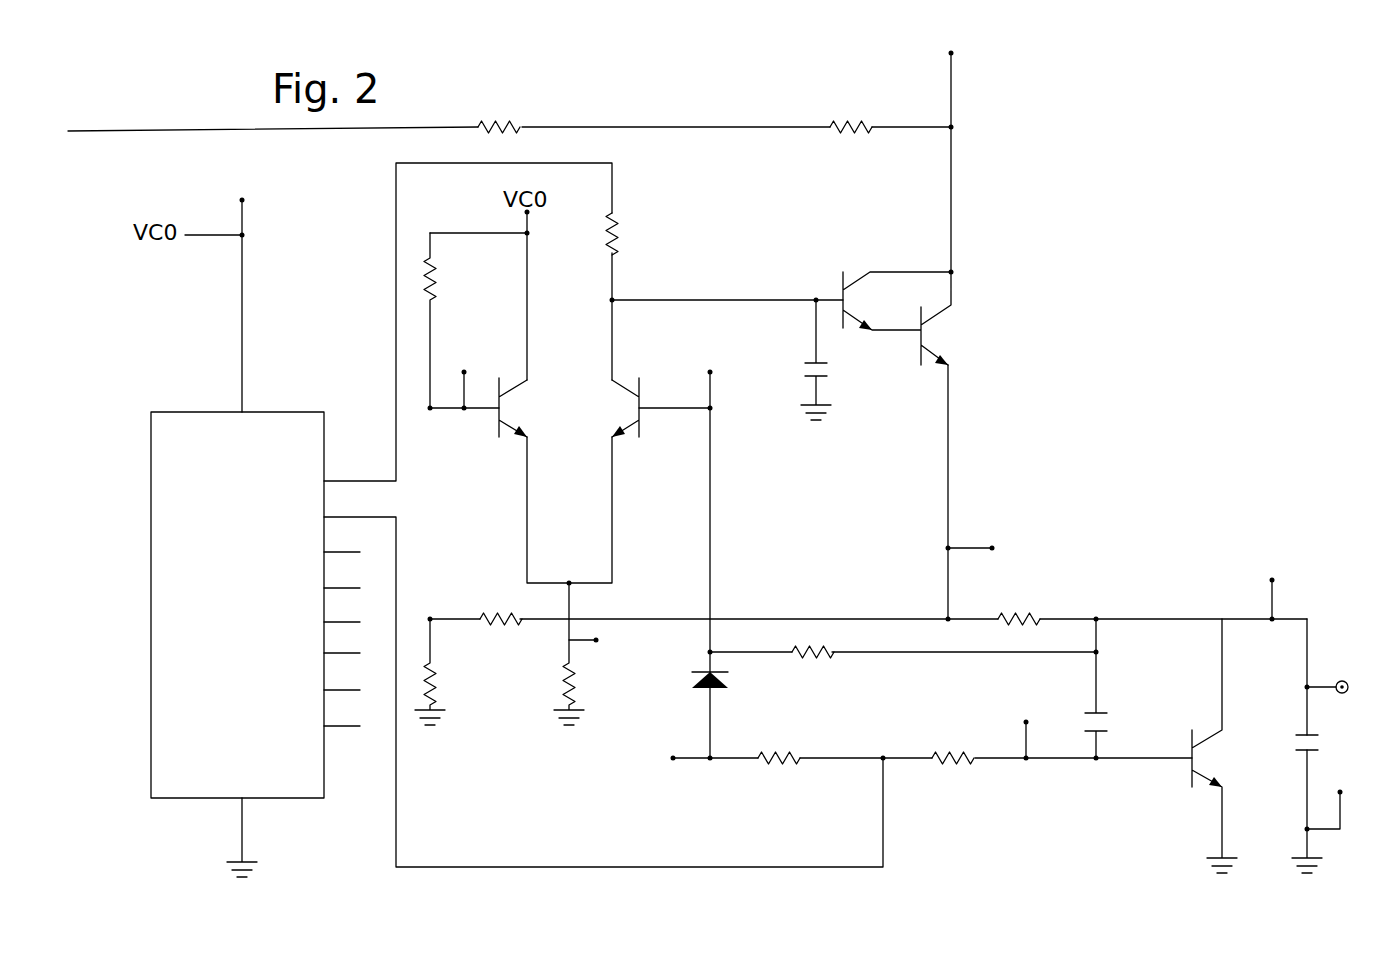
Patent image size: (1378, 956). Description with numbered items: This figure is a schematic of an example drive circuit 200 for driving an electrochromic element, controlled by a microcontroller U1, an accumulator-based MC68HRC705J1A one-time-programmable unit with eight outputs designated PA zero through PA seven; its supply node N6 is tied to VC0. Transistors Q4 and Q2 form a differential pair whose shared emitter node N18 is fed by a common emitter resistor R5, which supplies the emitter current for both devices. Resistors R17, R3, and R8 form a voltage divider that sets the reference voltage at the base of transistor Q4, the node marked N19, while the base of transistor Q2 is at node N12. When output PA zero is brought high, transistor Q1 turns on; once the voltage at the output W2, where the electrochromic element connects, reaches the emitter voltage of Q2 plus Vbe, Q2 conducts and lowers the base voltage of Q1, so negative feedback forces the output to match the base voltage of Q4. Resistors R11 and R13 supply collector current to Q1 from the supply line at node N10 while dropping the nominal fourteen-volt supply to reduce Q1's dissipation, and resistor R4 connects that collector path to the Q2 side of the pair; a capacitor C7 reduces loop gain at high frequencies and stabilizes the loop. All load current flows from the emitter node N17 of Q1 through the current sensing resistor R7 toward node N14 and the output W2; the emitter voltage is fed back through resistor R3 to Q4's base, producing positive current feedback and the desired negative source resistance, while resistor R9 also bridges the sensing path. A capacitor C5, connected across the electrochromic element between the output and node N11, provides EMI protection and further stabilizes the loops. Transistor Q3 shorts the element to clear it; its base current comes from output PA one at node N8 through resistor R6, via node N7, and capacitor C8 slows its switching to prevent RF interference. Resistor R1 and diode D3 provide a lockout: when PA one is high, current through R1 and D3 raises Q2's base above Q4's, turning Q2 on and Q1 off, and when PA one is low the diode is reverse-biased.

The drive circuit 200 is at (643, 70).
The resistor R11 is at (502, 111).
The resistor R13 is at (850, 107).
The node N10 is at (950, 147).
The resistor R4 is at (635, 236).
The resistor R17 is at (451, 320).
The node N19 is at (460, 378).
The transistor Q4 is at (493, 426).
The transistor Q2 is at (643, 429).
The node N12 is at (715, 551).
The transistor Q1 is at (918, 318).
The capacitor C7 is at (829, 360).
The node N17 is at (996, 549).
The resistor R3 is at (501, 605).
The current sensing resistor R7 is at (1019, 605).
The resistor R8 is at (442, 672).
The common emitter resistor R5 is at (580, 654).
The node N18 is at (610, 642).
The resistor R9 is at (813, 666).
The diode D3 is at (690, 682).
The node N8 is at (656, 759).
The resistor R1 is at (779, 744).
The resistor R6 is at (953, 744).
The node N7 is at (1024, 726).
The capacitor C8 is at (1110, 688).
The transistor Q3 is at (1220, 746).
The node N14 is at (1268, 584).
The output W2 is at (1337, 676).
The capacitor C5 is at (1321, 738).
The node N11 is at (1336, 797).
The microcontroller U1 is at (255, 588).
The node N6 is at (242, 203).